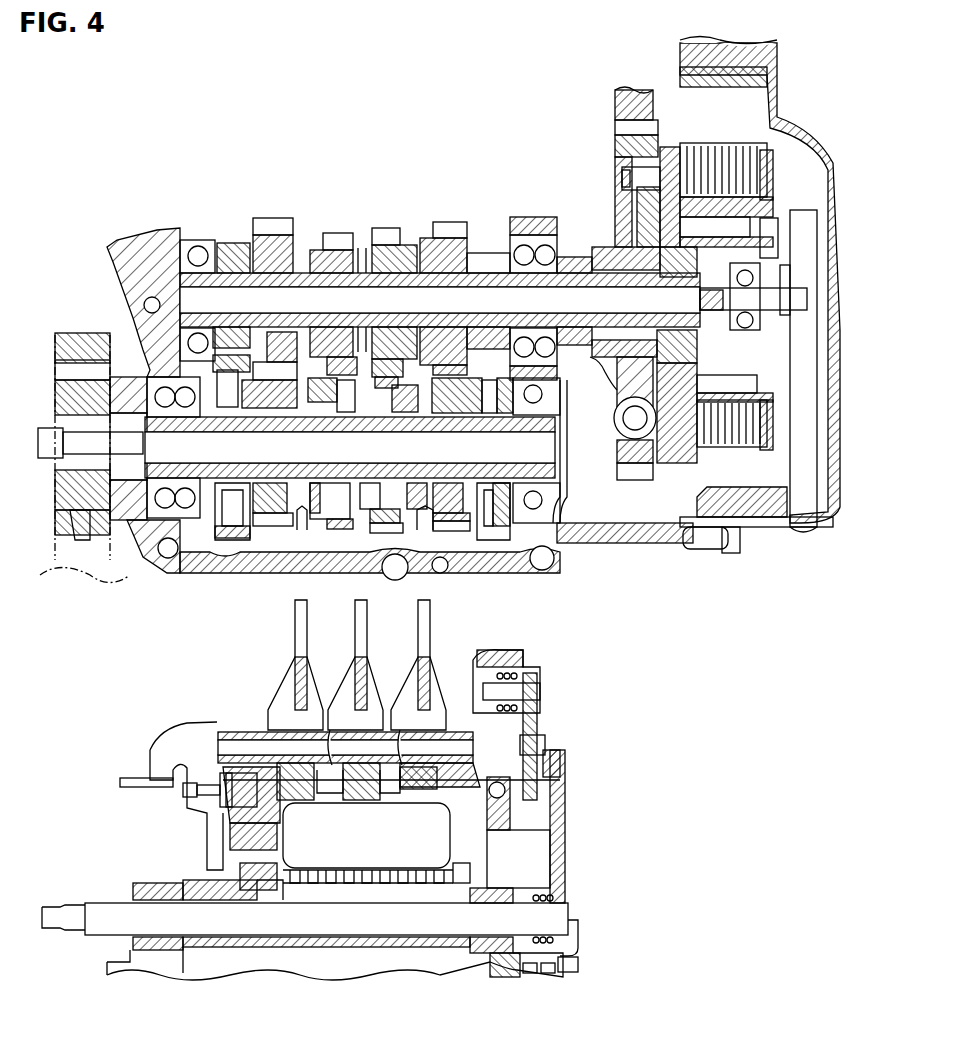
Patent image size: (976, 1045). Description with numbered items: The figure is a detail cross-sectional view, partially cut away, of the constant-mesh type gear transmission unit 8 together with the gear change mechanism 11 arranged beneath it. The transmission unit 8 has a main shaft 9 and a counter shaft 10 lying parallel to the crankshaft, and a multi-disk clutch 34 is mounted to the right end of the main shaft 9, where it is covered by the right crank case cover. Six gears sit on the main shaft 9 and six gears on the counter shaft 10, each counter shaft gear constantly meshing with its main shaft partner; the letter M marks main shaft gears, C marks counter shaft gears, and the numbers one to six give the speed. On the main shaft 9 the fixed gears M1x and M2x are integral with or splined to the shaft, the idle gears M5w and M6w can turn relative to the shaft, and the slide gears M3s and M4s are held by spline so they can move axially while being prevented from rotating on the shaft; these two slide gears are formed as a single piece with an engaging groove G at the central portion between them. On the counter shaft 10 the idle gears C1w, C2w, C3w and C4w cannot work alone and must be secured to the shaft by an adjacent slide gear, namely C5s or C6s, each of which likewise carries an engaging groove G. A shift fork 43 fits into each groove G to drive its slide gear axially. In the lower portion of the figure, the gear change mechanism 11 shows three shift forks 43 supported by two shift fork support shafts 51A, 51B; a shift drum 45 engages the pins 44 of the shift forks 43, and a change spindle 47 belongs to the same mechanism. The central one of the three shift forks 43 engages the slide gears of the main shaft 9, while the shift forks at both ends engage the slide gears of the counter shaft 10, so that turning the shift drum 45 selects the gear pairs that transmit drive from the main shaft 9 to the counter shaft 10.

The constant-mesh type gear transmission unit 8 is at (148, 222).
The main shaft 9 is at (235, 292).
The counter shaft 10 is at (105, 467).
The multi-disk clutch 34 is at (776, 158).
The first-speed main shaft fixed gear M1x is at (485, 257).
The second-speed main shaft fixed gear M2x is at (232, 246).
The third-speed main shaft slide gear M3s is at (320, 232).
The fourth-speed main shaft slide gear M4s is at (385, 232).
The fifth-speed main shaft idle gear M5w is at (450, 226).
The sixth-speed main shaft idle gear M6w is at (270, 225).
The engaging groove G is at (362, 240).
The first-speed counter shaft idle gear C1w is at (502, 552).
The second-speed counter shaft idle gear C2w is at (215, 575).
The third-speed counter shaft idle gear C3w is at (272, 522).
The fourth-speed counter shaft idle gear C4w is at (397, 532).
The fifth-speed counter shaft slide gear C5s is at (453, 525).
The sixth-speed counter shaft slide gear C6s is at (237, 548).
The gear change mechanism 11 is at (580, 808).
The shift fork 43 is at (284, 650).
The pin 44 is at (413, 800).
The shift drum 45 is at (393, 867).
The change spindle 47 is at (530, 917).
The shift fork support shaft 51A is at (480, 753).
The shift fork support shaft 51B is at (258, 735).